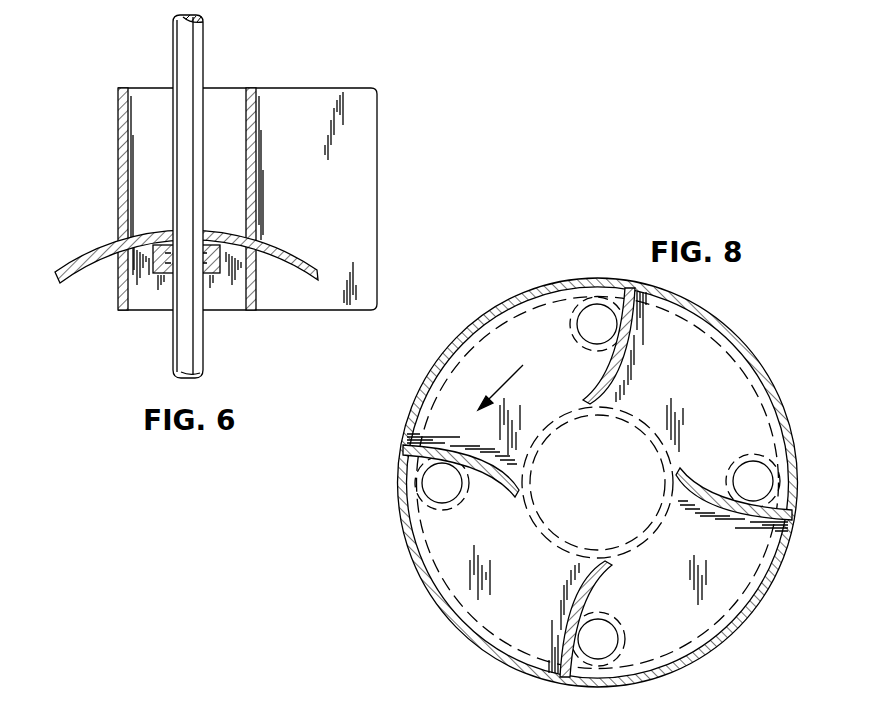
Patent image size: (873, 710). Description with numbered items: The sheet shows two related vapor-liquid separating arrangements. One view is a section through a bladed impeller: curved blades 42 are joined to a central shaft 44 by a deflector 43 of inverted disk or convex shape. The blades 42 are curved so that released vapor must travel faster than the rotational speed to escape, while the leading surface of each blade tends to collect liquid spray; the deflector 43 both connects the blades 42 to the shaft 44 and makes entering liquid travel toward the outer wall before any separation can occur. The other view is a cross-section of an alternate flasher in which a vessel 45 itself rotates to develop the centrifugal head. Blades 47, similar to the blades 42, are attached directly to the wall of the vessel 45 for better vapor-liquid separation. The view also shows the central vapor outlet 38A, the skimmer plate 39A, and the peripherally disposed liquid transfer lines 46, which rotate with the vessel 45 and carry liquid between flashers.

In FIG. 8, the vapor outlet 38A is at (572, 422).
In FIG. 8, the skimmer plate 39A is at (737, 367).
In FIG. 6, the blade 42 is at (118, 143).
In FIG. 6, the deflector 43 is at (82, 250).
In FIG. 6, the shaft 44 is at (180, 43).
In FIG. 8, the vessel 45 is at (570, 278).
In FIG. 8, the liquid transfer line 46 is at (597, 313).
In FIG. 8, the blade 47 is at (627, 363).